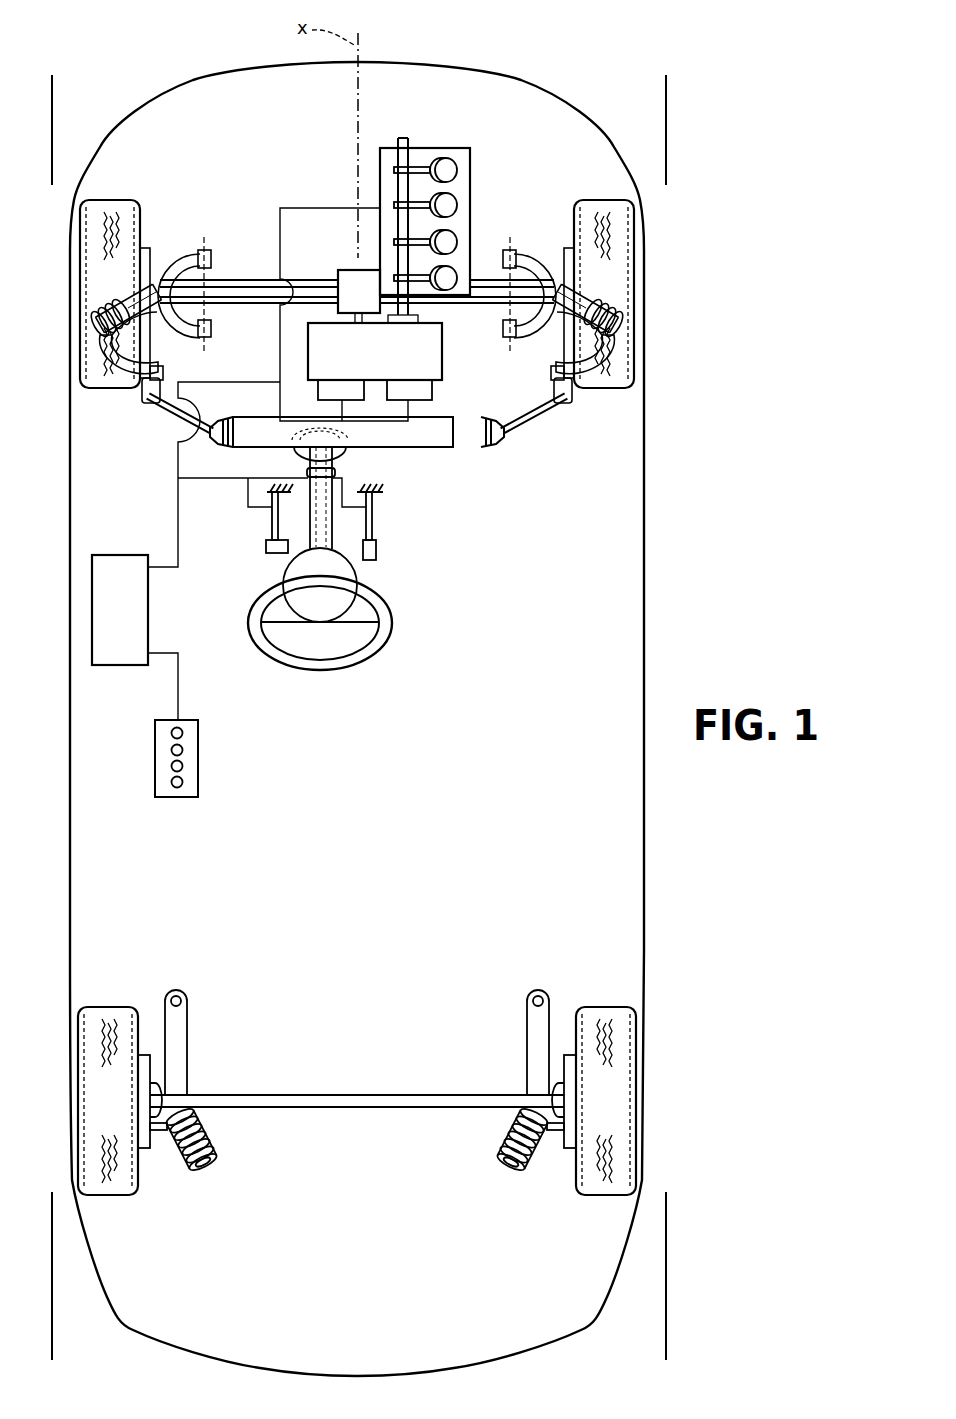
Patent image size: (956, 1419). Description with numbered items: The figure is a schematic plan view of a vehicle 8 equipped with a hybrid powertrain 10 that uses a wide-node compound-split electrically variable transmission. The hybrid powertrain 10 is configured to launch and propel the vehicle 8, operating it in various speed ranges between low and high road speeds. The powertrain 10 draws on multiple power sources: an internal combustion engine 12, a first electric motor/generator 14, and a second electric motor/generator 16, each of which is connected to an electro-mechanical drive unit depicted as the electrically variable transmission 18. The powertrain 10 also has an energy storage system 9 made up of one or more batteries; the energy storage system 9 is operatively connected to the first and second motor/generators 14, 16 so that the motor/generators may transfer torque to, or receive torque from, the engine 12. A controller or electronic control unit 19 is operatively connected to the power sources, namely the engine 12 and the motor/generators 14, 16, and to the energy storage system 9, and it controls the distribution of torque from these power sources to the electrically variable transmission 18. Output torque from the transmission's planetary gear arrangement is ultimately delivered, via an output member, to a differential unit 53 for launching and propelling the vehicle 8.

The vehicle 8 is at (679, 542).
The hybrid powertrain 10 is at (258, 154).
The internal combustion engine 12 is at (471, 144).
The first electric motor/generator 14 is at (470, 205).
The second electric motor/generator 16 is at (433, 396).
The electrically variable transmission 18 is at (375, 361).
The controller 19 is at (120, 610).
The differential unit 53 is at (359, 296).
The energy storage system 9 is at (198, 758).